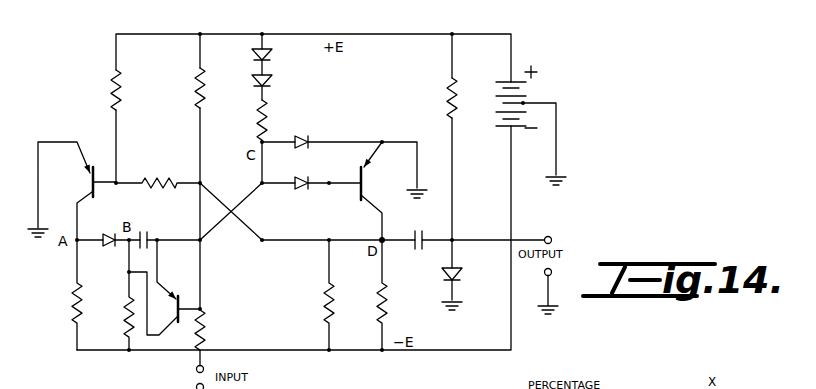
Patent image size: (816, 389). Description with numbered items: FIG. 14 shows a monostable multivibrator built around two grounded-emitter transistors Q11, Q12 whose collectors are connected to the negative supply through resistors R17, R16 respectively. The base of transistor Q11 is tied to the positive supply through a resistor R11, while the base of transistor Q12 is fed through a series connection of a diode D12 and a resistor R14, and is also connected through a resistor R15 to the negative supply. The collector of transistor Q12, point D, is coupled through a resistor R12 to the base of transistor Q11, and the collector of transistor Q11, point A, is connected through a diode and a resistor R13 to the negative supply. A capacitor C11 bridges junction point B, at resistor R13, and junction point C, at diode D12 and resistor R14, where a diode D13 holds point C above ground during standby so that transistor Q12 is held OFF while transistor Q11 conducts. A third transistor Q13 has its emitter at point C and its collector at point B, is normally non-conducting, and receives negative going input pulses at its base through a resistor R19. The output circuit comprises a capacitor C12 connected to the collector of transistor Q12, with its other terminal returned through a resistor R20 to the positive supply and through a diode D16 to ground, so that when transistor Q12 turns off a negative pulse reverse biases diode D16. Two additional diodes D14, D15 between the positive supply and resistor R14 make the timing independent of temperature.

The transistor Q11 is at (72, 191).
The transistor Q12 is at (384, 191).
The third transistor Q13 is at (164, 287).
The resistor R11 is at (99, 90).
The resistor R12 is at (158, 173).
The resistor R13 is at (114, 295).
The resistor R14 is at (244, 141).
The resistor R15 is at (313, 295).
The resistor R16 is at (368, 295).
The resistor R17 is at (63, 295).
The resistor R19 is at (217, 330).
The resistor R20 is at (434, 98).
The diode D12 is at (311, 173).
The diode D13 is at (344, 156).
The diode D14 is at (279, 62).
The diode D15 is at (279, 87).
The diode D16 is at (470, 289).
The capacitor C11 is at (149, 233).
The capacitor C12 is at (416, 231).